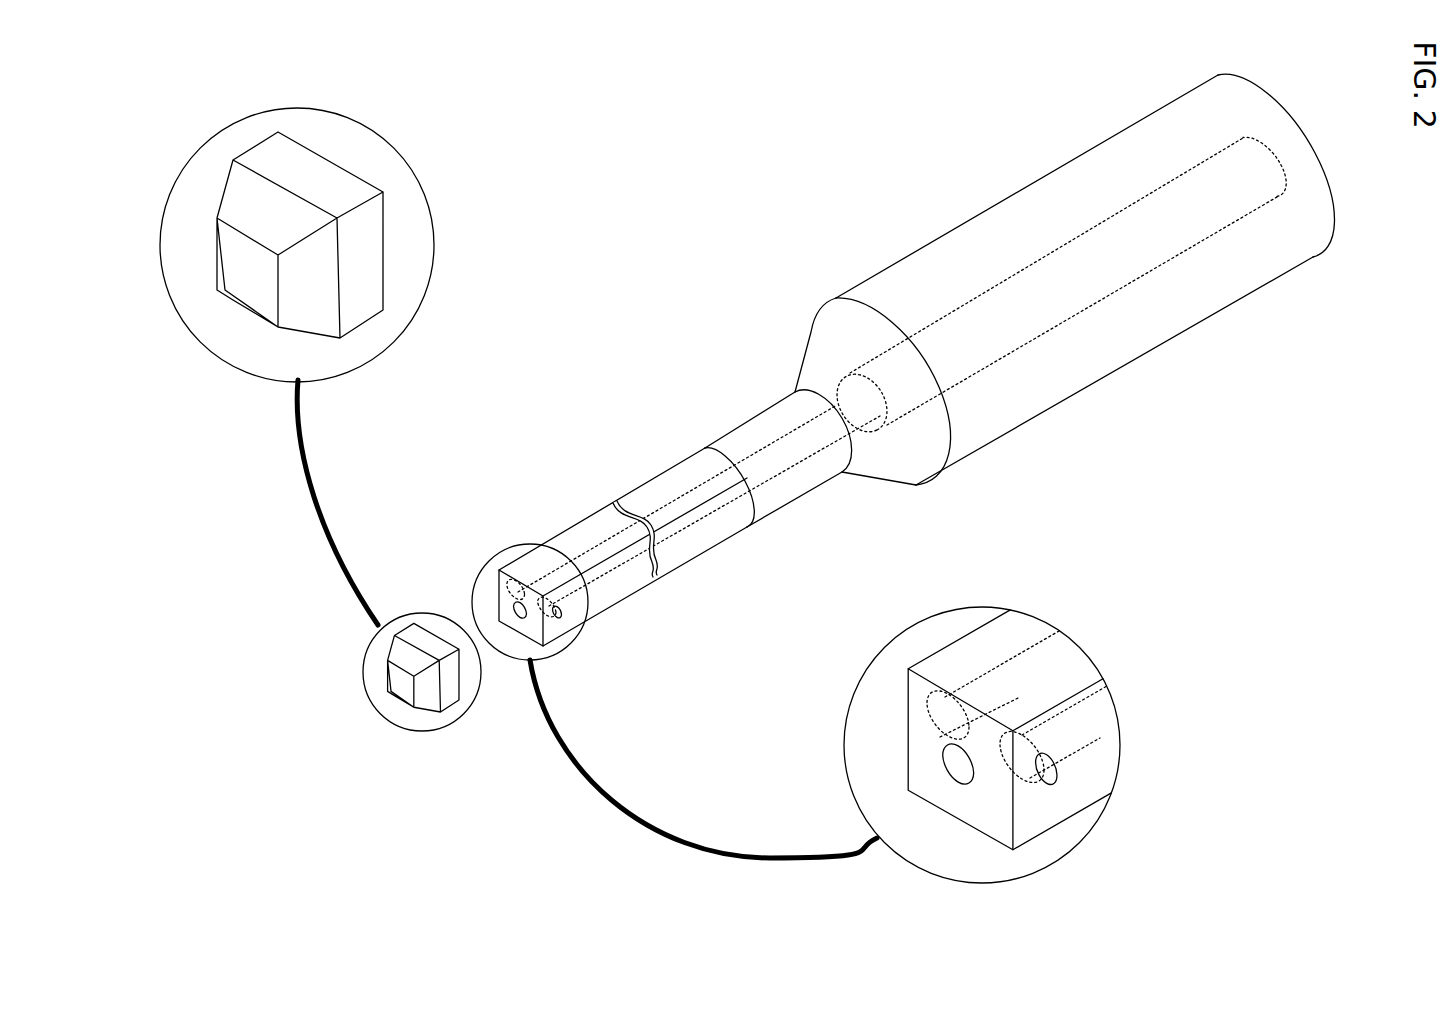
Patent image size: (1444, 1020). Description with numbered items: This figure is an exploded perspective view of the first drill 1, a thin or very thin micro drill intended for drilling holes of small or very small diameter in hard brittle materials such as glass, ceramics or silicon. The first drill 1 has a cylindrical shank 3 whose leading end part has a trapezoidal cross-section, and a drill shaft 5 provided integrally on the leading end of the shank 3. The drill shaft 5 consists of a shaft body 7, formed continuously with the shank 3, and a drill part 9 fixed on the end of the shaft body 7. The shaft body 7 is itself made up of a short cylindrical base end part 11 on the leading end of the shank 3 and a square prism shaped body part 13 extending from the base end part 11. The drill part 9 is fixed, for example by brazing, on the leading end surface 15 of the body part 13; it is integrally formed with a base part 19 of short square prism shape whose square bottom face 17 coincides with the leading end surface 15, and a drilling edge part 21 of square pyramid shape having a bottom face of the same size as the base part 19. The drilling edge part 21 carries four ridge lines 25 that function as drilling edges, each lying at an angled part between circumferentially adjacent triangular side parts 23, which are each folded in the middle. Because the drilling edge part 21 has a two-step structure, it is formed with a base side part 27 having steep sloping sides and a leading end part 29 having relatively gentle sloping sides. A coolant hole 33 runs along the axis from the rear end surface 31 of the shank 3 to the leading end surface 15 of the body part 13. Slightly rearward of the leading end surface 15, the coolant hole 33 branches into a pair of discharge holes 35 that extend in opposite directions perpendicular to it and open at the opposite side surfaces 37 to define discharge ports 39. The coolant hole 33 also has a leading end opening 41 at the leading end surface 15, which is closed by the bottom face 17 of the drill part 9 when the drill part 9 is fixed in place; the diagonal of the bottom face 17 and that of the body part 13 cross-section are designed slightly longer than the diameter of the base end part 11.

The first drill 1 is at (692, 270).
The shank 3 is at (1063, 431).
The drill shaft 5 is at (444, 592).
The shaft body 7 is at (700, 562).
The drill part 9 is at (402, 612).
The base end part 11 is at (755, 430).
The body part 13 is at (668, 484).
The leading end surface 15 is at (503, 600).
The bottom face 17 is at (343, 170).
The base part 19 is at (259, 157).
The drilling edge part 21 is at (264, 345).
The triangular side parts 23 is at (265, 222).
The ridge lines 25 is at (225, 172).
The base side part 27 is at (247, 207).
The leading end part 29 is at (225, 287).
The rear end surface 31 is at (1313, 137).
The coolant hole 33 is at (772, 470).
The discharge holes 35 is at (528, 587).
The side surfaces 37 is at (587, 512).
The discharge ports 39 is at (519, 600).
The leading end opening 41 is at (528, 615).